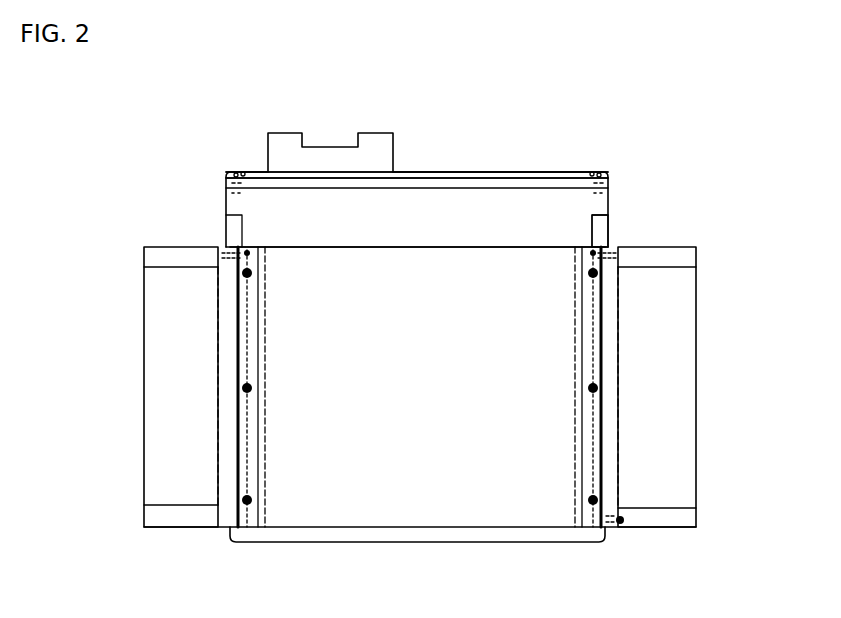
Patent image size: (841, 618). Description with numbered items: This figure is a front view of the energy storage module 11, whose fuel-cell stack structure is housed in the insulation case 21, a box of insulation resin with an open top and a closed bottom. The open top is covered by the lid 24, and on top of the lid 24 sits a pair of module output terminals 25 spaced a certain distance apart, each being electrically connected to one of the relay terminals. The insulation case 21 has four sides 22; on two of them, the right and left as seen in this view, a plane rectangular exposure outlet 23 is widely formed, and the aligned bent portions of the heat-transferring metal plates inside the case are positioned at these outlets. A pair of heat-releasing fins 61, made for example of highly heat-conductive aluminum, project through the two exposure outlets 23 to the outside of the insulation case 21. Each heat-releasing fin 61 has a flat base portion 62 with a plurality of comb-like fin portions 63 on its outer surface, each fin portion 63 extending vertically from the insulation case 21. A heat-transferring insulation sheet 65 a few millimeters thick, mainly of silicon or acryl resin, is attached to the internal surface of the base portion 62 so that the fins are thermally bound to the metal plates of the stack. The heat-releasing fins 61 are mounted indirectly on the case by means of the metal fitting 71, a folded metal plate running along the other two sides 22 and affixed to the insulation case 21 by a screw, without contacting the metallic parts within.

The energy storage module 11 is at (603, 147).
The insulation case 21 is at (608, 223).
The sides 22 is at (230, 217).
The exposure outlet 23 is at (628, 523).
The lid 24 is at (511, 177).
The module output terminal 25 is at (332, 152).
The heat-releasing fin 61 is at (143, 318).
The base portion 62 is at (217, 373).
The fin portion 63 is at (162, 438).
The heat-transferring insulation sheet 65 is at (255, 323).
The metal fitting 71 is at (436, 403).